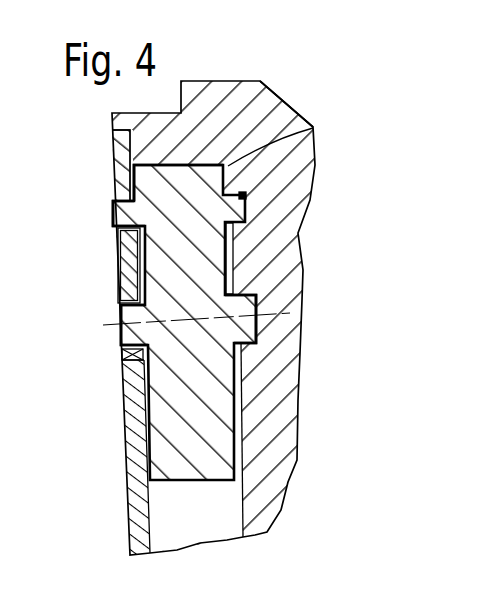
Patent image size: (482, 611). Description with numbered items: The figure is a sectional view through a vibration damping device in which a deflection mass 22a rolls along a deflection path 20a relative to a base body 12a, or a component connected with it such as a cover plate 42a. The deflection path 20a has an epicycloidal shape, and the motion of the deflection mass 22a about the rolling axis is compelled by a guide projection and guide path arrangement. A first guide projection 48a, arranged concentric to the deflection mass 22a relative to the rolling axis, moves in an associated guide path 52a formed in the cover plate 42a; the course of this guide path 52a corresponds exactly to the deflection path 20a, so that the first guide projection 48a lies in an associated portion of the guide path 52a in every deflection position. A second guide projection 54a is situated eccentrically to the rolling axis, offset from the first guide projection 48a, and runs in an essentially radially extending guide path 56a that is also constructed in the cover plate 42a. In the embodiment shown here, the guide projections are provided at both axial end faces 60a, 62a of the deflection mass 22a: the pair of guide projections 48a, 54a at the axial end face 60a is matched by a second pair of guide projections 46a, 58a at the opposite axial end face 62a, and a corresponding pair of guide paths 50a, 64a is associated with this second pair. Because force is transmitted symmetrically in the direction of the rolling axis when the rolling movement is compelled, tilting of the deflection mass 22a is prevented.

The base body 12a is at (298, 183).
The deflection path 20a is at (228, 165).
The deflection mass 22a is at (181, 180).
The cover plate 42a is at (131, 527).
The first guide projection (second axial end face) 46a is at (247, 313).
The first guide projection 48a is at (125, 315).
The guide path 50a is at (243, 348).
The guide path 52a is at (122, 357).
The second guide projection 54a is at (120, 202).
The guide path 56a is at (120, 229).
The second guide projection (second axial end face) 58a is at (248, 204).
The axial end face 60a is at (120, 237).
The axial end face 62a is at (228, 257).
The guide path 64a is at (313, 128).